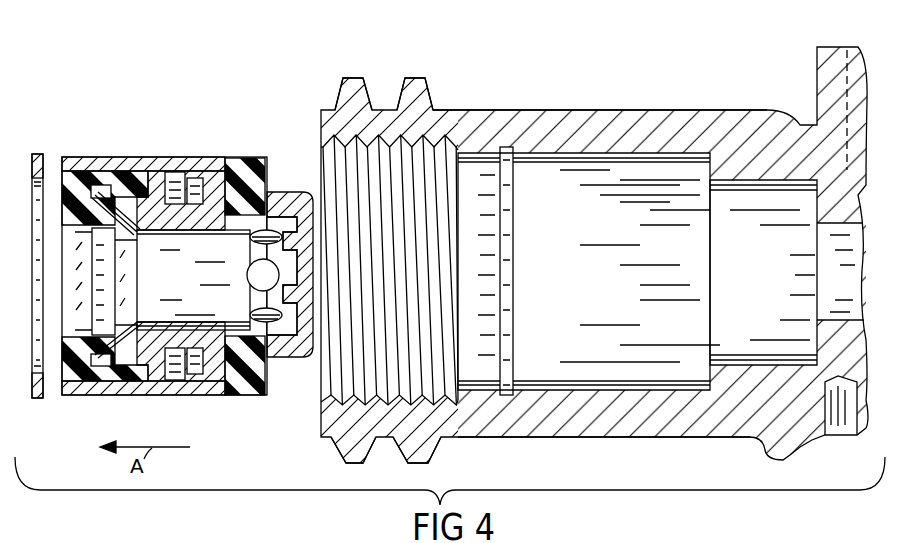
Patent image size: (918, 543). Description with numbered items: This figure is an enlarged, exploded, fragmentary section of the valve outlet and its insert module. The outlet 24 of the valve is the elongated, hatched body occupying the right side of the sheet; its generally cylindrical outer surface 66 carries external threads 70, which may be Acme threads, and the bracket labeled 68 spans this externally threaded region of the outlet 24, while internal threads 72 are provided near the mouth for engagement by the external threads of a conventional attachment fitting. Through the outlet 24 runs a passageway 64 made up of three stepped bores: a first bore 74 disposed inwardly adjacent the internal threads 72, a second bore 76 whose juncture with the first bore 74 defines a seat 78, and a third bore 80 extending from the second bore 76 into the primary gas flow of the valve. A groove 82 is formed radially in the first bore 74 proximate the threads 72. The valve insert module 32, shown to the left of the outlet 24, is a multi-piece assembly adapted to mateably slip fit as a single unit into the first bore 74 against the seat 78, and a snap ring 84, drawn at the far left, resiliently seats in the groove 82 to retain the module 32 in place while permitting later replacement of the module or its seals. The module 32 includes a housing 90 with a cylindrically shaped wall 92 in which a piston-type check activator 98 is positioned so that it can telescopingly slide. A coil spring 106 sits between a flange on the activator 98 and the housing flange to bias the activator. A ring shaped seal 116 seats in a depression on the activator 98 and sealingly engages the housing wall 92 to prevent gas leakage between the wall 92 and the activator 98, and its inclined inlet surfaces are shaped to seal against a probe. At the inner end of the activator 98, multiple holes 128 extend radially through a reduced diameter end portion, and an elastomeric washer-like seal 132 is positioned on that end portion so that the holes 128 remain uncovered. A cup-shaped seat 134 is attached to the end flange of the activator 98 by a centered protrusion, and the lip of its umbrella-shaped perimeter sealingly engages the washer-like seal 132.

The outlet 24 is at (596, 82).
The valve insert module 32 is at (131, 130).
The passageway 64 is at (597, 363).
The outer surface 66 is at (512, 110).
The threaded portion 68 is at (437, 50).
The external threads 70 is at (423, 78).
The internal threads 72 is at (330, 402).
The first bore 74 is at (595, 294).
The second bore 76 is at (755, 304).
The seat 78 is at (700, 180).
The third bore 80 is at (840, 271).
The groove 82 is at (513, 210).
The snap ring 84 is at (37, 146).
The housing 90 is at (126, 398).
The cylindrically shaped wall 92 is at (96, 157).
The piston-type check activator 98 is at (177, 287).
The coil spring 106 is at (173, 170).
The ring shaped seal 116 is at (78, 192).
The holes 128 is at (250, 275).
The washer-like seal 132 is at (235, 158).
The cup-shaped seat 134 is at (287, 192).